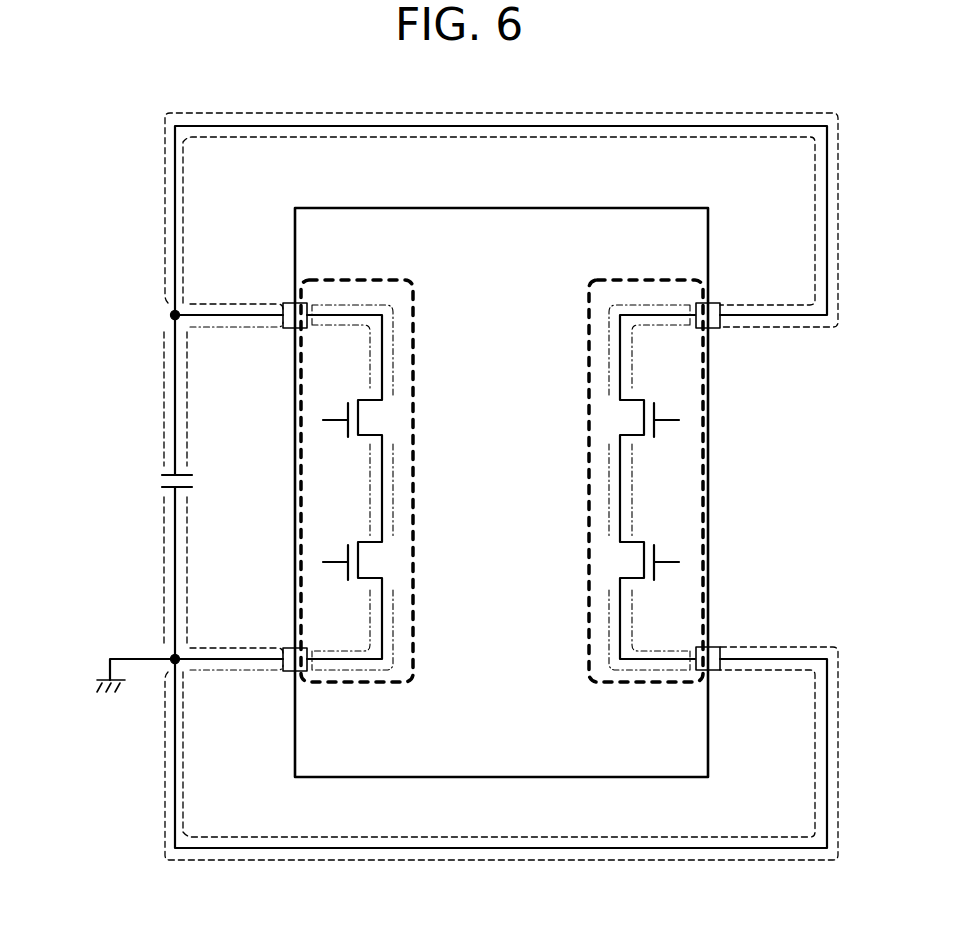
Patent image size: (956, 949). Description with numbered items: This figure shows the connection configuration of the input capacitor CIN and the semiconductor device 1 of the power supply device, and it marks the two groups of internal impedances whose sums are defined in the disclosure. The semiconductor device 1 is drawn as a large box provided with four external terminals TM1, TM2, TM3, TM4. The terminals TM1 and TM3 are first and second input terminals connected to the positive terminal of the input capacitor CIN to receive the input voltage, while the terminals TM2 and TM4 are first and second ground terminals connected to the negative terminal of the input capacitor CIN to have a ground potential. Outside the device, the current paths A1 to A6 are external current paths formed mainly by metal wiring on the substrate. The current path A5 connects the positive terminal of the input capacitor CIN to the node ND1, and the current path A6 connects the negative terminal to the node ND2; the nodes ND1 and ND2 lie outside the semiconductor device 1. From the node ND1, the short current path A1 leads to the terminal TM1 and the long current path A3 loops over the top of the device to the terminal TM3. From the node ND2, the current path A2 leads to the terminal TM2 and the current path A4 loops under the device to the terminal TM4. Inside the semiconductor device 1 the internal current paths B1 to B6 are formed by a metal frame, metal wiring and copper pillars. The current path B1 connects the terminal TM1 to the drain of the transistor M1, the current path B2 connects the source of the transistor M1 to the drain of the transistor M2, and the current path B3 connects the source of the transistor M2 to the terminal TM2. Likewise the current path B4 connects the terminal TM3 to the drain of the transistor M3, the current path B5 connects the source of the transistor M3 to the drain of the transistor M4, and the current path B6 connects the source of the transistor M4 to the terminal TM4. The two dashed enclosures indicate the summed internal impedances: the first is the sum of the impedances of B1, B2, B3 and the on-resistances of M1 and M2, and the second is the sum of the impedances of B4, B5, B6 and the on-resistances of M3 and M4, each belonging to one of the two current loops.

The semiconductor device 1 is at (510, 208).
The current path A1 is at (238, 330).
The current path A2 is at (238, 646).
The current path A3 is at (490, 113).
The current path A4 is at (485, 860).
The current path A5 is at (163, 374).
The current path A6 is at (163, 556).
The current path B1 is at (395, 346).
The current path B2 is at (395, 486).
The current path B3 is at (395, 611).
The current path B4 is at (607, 346).
The current path B5 is at (607, 486).
The current path B6 is at (607, 611).
The transistor M1 is at (361, 398).
The transistor M2 is at (361, 540).
The transistor M3 is at (639, 398).
The transistor M4 is at (639, 540).
The terminal TM1 is at (282, 301).
The terminal TM2 is at (282, 674).
The terminal TM3 is at (722, 301).
The terminal TM4 is at (722, 674).
The node ND1 is at (172, 313).
The node ND2 is at (172, 656).
The input capacitor CIN is at (160, 482).